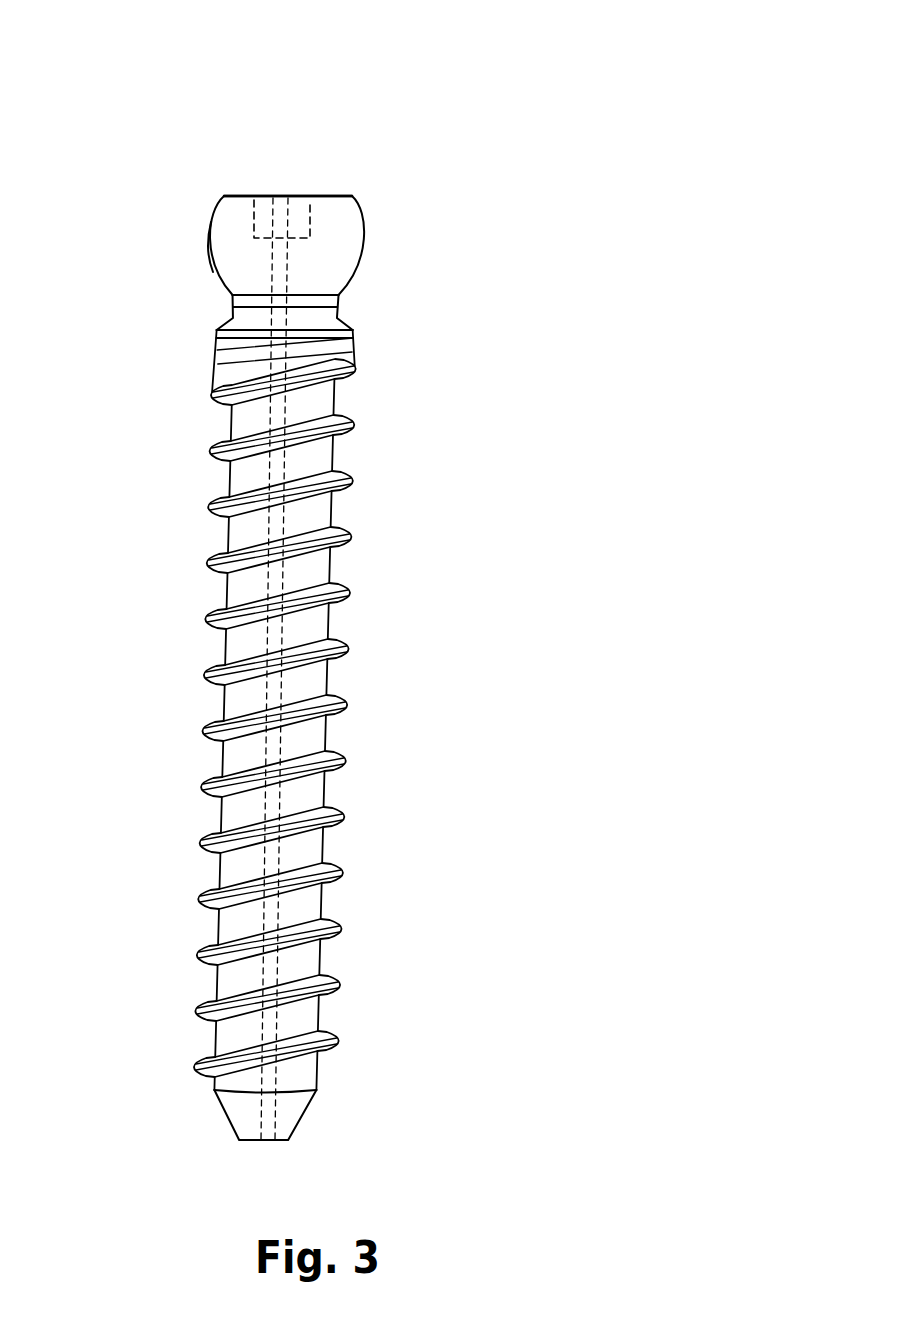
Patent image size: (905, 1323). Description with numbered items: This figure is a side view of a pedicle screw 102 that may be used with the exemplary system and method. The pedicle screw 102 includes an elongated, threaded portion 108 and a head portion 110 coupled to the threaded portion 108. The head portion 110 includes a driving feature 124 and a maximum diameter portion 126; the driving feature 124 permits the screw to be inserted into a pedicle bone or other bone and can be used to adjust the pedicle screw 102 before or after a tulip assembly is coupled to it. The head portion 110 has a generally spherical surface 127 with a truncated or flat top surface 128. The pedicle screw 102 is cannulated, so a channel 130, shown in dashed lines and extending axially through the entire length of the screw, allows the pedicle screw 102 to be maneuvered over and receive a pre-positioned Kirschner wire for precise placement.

The pedicle screw 102 is at (623, 96).
The threaded portion 108 is at (423, 526).
The head portion 110 is at (388, 240).
The driving feature 124 is at (279, 192).
The maximum diameter portion 126 is at (211, 257).
The generally spherical surface 127 is at (213, 237).
The truncated or flat top surface 128 is at (332, 195).
The channel 130 is at (234, 1123).